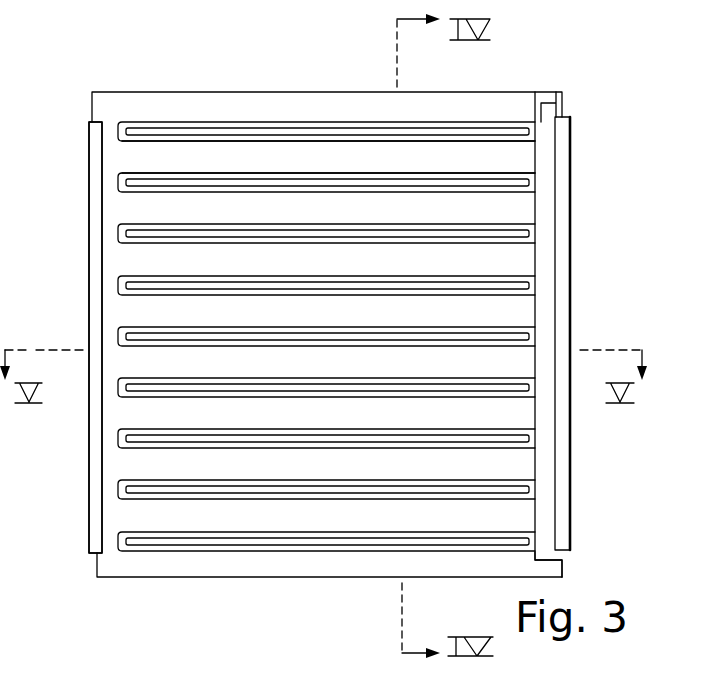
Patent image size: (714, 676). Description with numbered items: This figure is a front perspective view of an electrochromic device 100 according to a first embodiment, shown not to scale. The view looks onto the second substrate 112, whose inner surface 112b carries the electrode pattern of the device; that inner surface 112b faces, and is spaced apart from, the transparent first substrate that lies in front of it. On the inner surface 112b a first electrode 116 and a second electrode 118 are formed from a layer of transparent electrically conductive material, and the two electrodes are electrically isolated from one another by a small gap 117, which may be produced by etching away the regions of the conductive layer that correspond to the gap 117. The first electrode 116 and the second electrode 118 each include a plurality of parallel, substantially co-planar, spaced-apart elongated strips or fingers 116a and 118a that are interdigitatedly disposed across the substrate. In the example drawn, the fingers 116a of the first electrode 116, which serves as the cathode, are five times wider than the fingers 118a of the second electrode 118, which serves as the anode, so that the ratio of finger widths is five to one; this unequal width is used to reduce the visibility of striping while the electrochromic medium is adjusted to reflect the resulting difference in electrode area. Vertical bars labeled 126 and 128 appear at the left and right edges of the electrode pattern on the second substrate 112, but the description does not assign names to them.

The electrochromic device 100 is at (193, 133).
The second substrate 112 is at (553, 95).
The inner surface 112b is at (568, 576).
The first electrode 116 is at (97, 270).
The fingers 116a is at (498, 208).
The gap 117 is at (332, 140).
The second electrode 118 is at (374, 308).
The fingers 118a is at (258, 185).
The left bus bar 126 is at (95, 173).
The right bus bar 128 is at (571, 153).